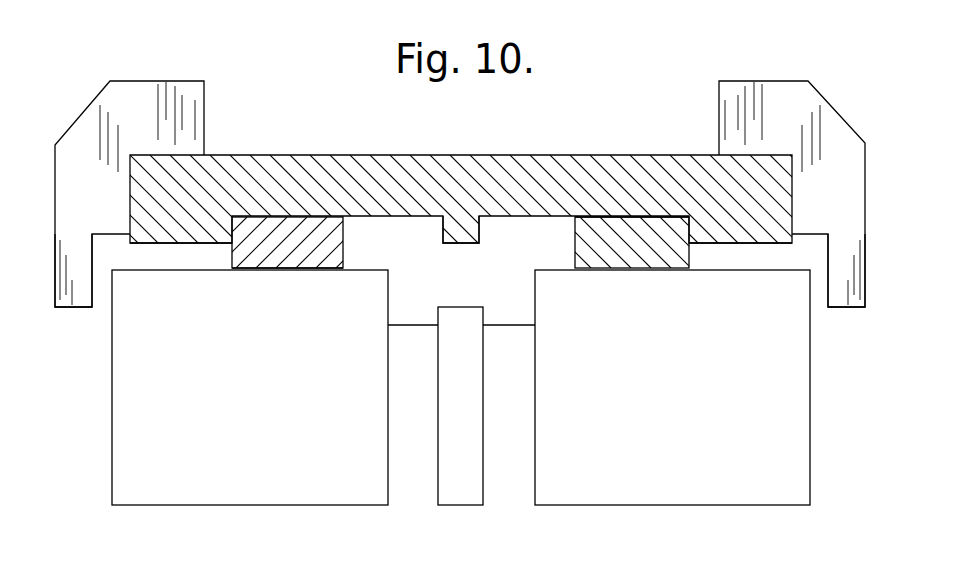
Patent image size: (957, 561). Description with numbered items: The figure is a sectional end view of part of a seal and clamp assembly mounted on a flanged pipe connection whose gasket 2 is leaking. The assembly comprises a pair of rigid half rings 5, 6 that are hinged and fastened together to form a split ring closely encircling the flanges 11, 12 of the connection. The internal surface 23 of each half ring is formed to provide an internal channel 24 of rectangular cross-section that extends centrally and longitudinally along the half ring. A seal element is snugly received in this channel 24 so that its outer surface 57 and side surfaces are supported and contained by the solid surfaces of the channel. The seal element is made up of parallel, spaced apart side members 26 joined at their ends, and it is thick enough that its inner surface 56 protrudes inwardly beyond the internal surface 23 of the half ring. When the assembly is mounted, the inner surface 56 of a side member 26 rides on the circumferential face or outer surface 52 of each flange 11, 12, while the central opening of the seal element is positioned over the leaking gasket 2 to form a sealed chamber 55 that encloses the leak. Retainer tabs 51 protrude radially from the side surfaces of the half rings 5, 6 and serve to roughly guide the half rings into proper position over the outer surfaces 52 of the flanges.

The leaking gasket 2 is at (470, 424).
The half ring 5 is at (464, 166).
The half ring 6 is at (537, 155).
The flange 11 is at (267, 418).
The flange 12 is at (689, 427).
The internal surface 23 is at (173, 247).
The internal channel 24 is at (412, 217).
The side member 26 is at (292, 233).
The retainer tab 51 is at (58, 290).
The outer surface 52 is at (200, 267).
The sealed chamber 55 is at (479, 291).
The inner surface 56 is at (297, 270).
The outer surface 57 is at (580, 217).